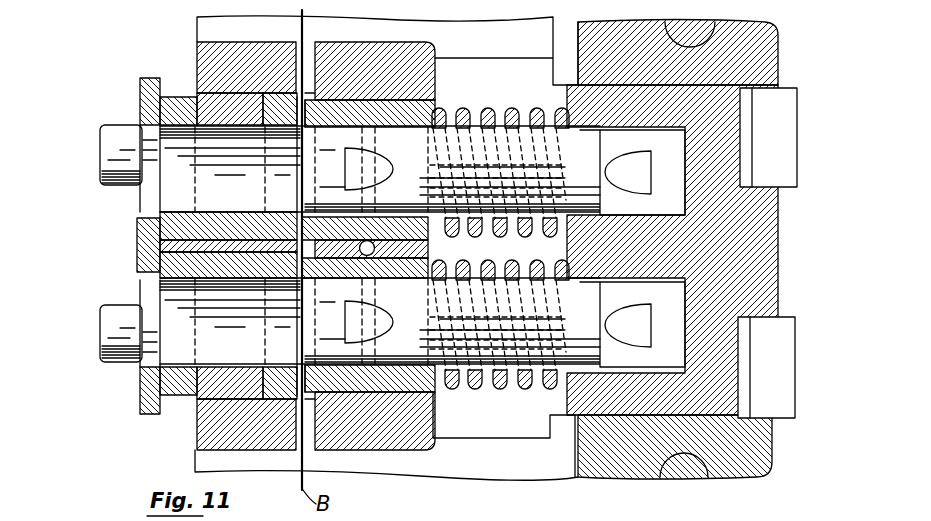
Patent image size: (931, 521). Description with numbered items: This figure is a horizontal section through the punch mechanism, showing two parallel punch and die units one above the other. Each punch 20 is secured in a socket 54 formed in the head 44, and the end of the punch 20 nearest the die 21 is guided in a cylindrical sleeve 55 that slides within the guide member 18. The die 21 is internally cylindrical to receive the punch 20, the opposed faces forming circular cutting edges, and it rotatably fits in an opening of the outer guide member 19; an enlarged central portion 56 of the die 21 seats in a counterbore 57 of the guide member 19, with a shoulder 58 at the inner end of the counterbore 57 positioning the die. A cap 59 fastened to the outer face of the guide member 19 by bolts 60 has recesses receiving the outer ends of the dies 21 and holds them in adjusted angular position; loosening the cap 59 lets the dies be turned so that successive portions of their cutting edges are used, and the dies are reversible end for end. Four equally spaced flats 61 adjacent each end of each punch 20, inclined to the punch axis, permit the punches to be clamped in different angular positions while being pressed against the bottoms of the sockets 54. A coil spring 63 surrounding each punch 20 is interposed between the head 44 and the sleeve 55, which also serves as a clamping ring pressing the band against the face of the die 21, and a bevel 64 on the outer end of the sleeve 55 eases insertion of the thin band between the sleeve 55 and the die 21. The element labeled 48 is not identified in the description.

The guide member 18 is at (435, 58).
The outer guide member 19 is at (197, 46).
The punch 20 is at (418, 168).
The die 21 is at (157, 108).
The head 44 is at (718, 265).
The end block 48 is at (777, 107).
The socket 54 is at (598, 192).
The cylindrical sleeve 55 is at (414, 108).
The enlarged central portion 56 is at (216, 92).
The counterbore 57 is at (238, 93).
The shoulder 58 is at (272, 95).
The cap 59 is at (137, 233).
The bolt 60 is at (106, 140).
The flat 61 is at (380, 200).
The coil spring 63 is at (517, 115).
The bevel 64 is at (308, 96).